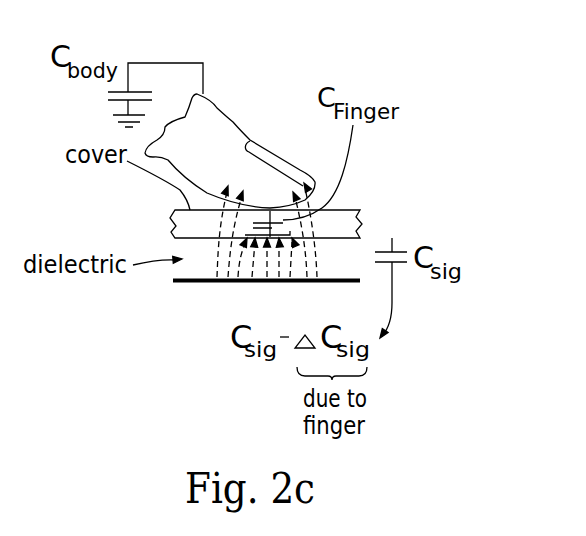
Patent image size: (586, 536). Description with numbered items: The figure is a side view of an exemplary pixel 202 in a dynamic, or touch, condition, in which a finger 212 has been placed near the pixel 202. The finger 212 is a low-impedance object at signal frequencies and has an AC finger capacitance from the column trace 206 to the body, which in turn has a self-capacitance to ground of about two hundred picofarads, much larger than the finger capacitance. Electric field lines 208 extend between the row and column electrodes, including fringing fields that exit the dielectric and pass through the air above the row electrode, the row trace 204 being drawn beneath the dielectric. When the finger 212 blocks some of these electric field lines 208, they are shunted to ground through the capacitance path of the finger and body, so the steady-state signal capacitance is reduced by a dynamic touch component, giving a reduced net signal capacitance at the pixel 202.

The finger 212 is at (237, 120).
The column trace 206 is at (247, 235).
The electric field lines 208 is at (317, 255).
The row trace 204 is at (185, 285).
The pixel 202 is at (208, 309).